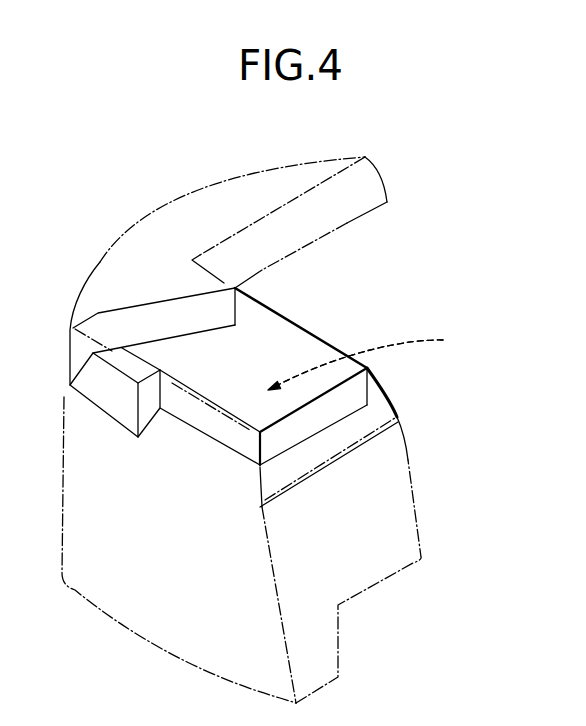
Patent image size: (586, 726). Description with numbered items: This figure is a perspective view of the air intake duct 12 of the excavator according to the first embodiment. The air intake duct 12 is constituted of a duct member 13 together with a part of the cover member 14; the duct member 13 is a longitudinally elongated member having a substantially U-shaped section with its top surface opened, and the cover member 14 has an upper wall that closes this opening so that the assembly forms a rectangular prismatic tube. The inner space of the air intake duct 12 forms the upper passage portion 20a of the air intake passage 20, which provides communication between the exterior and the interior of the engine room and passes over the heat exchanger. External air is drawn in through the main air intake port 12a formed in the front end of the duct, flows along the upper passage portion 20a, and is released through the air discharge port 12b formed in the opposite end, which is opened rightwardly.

The air intake duct 12 is at (392, 308).
The main air intake port 12a is at (342, 408).
The air discharge port 12b is at (112, 392).
The duct member 13 is at (335, 345).
The cover member 14 is at (99, 273).
The air intake passage 20 is at (357, 364).
The upper passage portion 20a is at (404, 357).